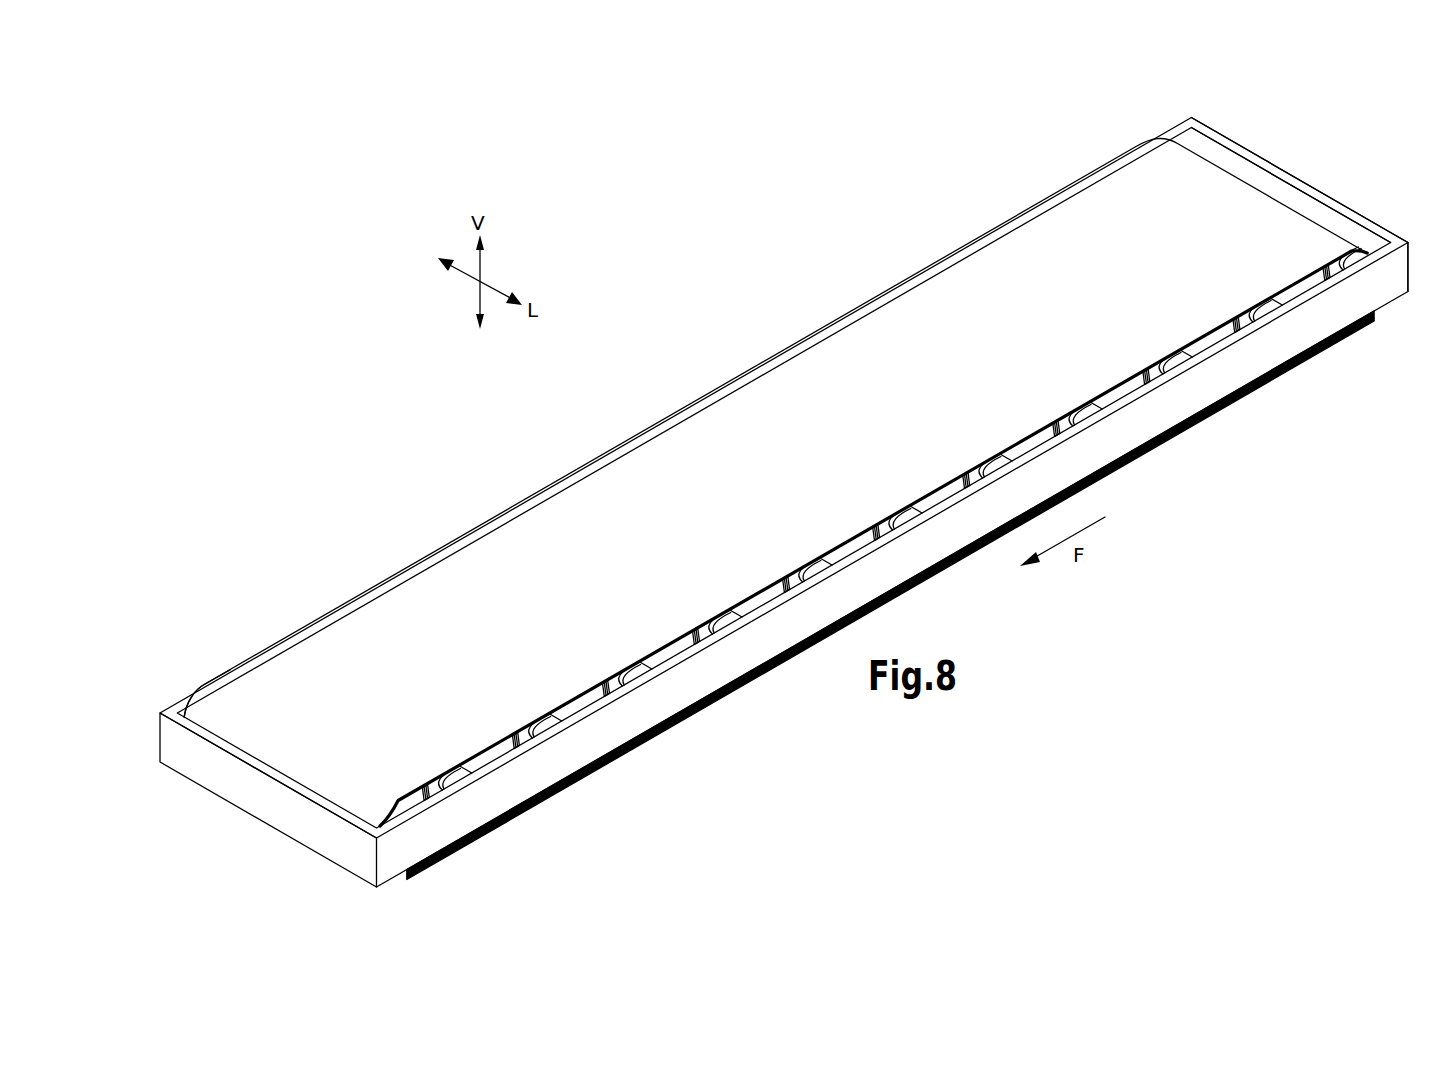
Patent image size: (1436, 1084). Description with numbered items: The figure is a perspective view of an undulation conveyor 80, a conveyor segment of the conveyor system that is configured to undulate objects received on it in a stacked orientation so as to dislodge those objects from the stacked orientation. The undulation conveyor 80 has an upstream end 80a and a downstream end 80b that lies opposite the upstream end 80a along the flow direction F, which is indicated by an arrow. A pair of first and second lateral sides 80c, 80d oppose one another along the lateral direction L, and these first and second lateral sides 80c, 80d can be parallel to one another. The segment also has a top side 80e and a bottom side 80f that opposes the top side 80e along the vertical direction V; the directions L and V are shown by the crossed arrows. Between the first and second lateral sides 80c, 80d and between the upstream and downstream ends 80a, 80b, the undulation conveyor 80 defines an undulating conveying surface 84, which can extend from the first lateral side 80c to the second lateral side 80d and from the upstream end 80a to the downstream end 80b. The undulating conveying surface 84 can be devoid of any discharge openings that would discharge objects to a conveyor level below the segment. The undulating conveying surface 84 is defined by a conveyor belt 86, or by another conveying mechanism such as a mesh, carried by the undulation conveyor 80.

The undulation conveyor 80 is at (945, 208).
The upstream end 80a is at (1295, 177).
The downstream end 80b is at (242, 782).
The first lateral side 80c is at (181, 700).
The second lateral side 80d is at (534, 777).
The top side 80e is at (568, 523).
The bottom side 80f is at (691, 706).
The undulating conveying surface 84 is at (700, 460).
The conveyor belt 86 is at (810, 383).